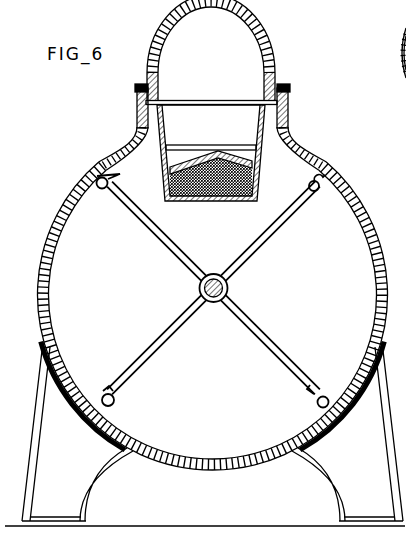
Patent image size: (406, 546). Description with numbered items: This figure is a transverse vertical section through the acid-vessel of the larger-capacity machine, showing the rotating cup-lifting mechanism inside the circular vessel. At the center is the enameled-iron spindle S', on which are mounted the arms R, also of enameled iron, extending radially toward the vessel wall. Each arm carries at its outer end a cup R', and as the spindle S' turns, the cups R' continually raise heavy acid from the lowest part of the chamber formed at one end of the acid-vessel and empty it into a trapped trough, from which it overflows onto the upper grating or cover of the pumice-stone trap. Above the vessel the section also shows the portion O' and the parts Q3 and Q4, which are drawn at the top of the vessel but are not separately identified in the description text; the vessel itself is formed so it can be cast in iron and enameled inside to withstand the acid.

The hood O' is at (211, 50).
The perforated partition Q3 is at (183, 165).
The receptacle Q4 is at (211, 153).
The arms R is at (213, 288).
The cups R' is at (206, 294).
The spindle S' is at (199, 288).